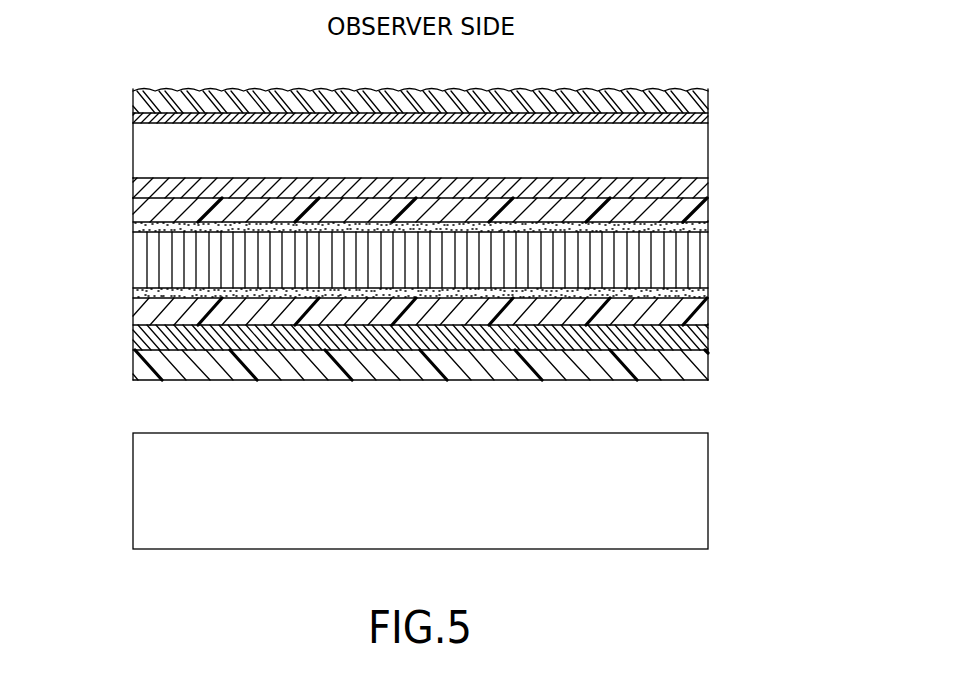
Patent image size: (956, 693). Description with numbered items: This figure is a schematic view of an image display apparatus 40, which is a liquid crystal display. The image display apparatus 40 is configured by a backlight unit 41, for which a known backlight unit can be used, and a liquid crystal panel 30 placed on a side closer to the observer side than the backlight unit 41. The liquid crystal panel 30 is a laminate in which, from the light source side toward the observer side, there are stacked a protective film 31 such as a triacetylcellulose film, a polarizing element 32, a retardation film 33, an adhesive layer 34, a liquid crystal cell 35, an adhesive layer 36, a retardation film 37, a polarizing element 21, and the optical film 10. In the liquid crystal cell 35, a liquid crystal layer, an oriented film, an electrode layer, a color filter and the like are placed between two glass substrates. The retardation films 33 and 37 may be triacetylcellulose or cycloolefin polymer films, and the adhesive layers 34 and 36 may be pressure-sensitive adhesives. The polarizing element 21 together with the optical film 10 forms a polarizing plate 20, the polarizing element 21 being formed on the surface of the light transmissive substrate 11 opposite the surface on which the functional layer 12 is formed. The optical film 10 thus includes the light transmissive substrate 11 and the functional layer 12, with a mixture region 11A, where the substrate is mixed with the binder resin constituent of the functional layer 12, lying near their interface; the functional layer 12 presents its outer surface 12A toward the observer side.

The image display apparatus 40 is at (535, 62).
The polarizing plate 20 is at (75, 90).
The optical film 10 is at (120, 90).
The liquid crystal panel 30 is at (120, 198).
The uneven surface of antiglare layer 12A is at (613, 89).
The functional layer 12 is at (708, 89).
The mixture region 11A is at (703, 118).
The light transmissive substrate 11 is at (697, 163).
The polarizing element 21 is at (708, 195).
The retardation film 37 is at (700, 212).
The adhesive layer 36 is at (708, 230).
The liquid crystal cell 35 is at (703, 263).
The adhesive layer 34 is at (708, 288).
The retardation film 33 is at (703, 315).
The polarizing element 32 is at (707, 347).
The protective film 31 is at (702, 373).
The backlight unit 41 is at (695, 492).